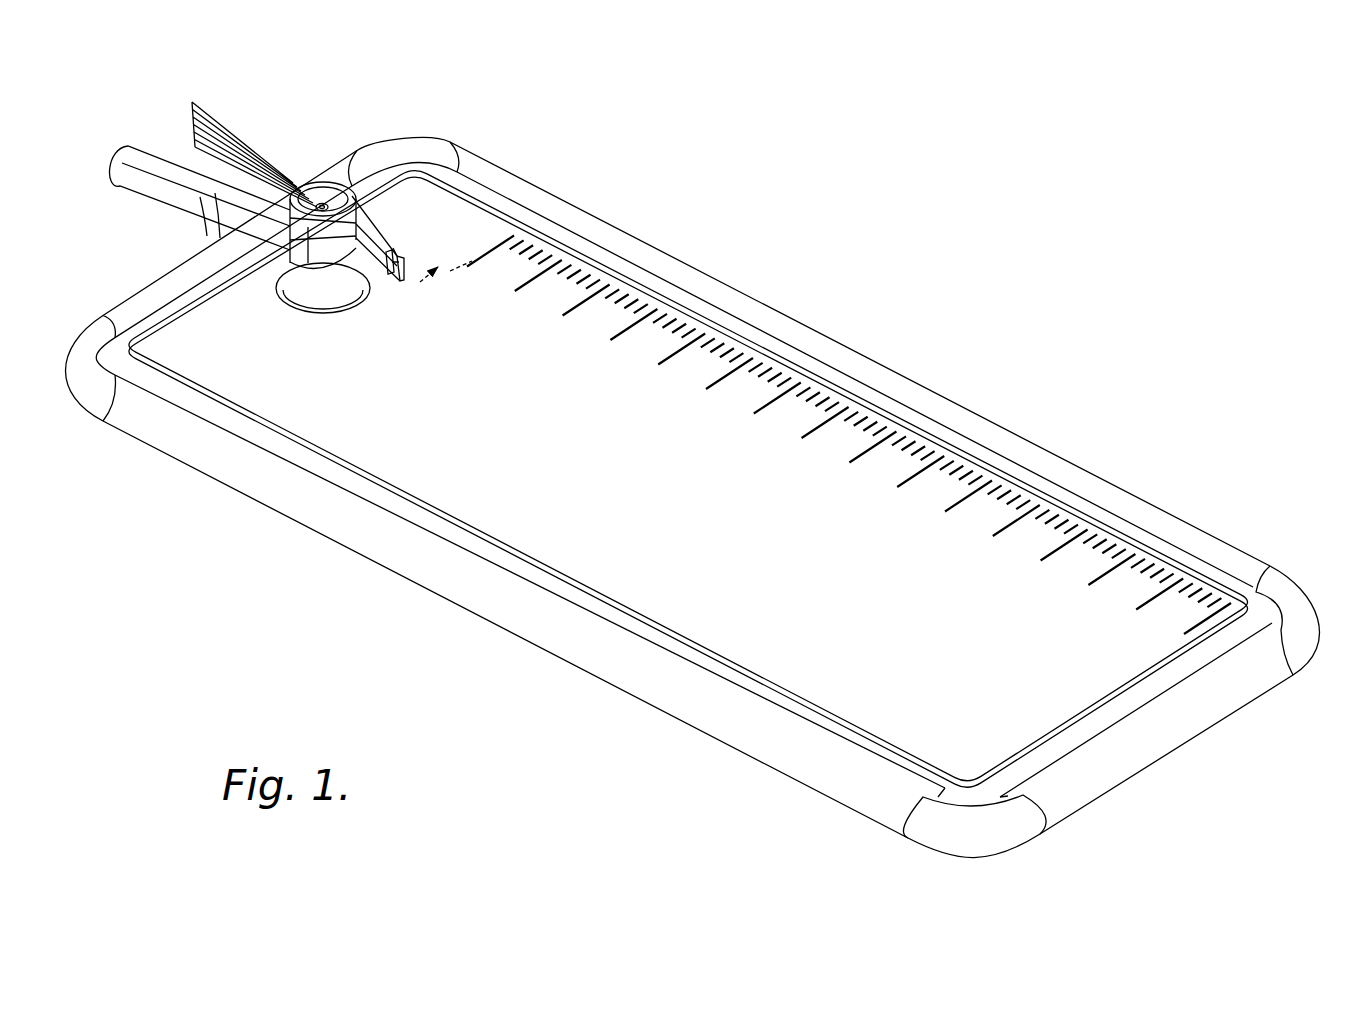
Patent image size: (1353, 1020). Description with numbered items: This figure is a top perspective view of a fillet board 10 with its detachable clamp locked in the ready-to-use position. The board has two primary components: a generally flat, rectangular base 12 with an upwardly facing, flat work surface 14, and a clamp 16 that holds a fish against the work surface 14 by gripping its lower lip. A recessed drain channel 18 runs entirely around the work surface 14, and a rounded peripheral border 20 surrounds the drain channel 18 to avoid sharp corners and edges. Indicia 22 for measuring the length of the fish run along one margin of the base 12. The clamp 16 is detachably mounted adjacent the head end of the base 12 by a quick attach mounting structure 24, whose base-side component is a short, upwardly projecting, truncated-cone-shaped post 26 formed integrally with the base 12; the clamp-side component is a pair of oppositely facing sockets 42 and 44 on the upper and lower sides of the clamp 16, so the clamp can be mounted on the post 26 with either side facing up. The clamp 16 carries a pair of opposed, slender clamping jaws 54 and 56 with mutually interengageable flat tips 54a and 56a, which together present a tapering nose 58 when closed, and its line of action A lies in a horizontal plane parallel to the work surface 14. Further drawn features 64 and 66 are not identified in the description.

The fillet board 10 is at (640, 190).
The base 12 is at (1035, 432).
The work surface 14 is at (711, 494).
The clamp 16 is at (285, 134).
The drain channel 18 is at (388, 500).
The peripheral border 20 is at (204, 448).
The indicia 22 is at (997, 533).
The quick attach mounting structure 24 is at (297, 282).
The post 26 is at (307, 295).
The socket 42 is at (320, 182).
The socket 44 is at (293, 270).
The clamping jaw 54 is at (367, 213).
The tip 54a is at (398, 251).
The clamping jaw 56 is at (340, 262).
The tip 56a is at (391, 275).
The tapering nose 58 is at (396, 238).
The bristles / wires 64 is at (207, 112).
The handle 66 is at (138, 183).
The line of action A is at (393, 300).